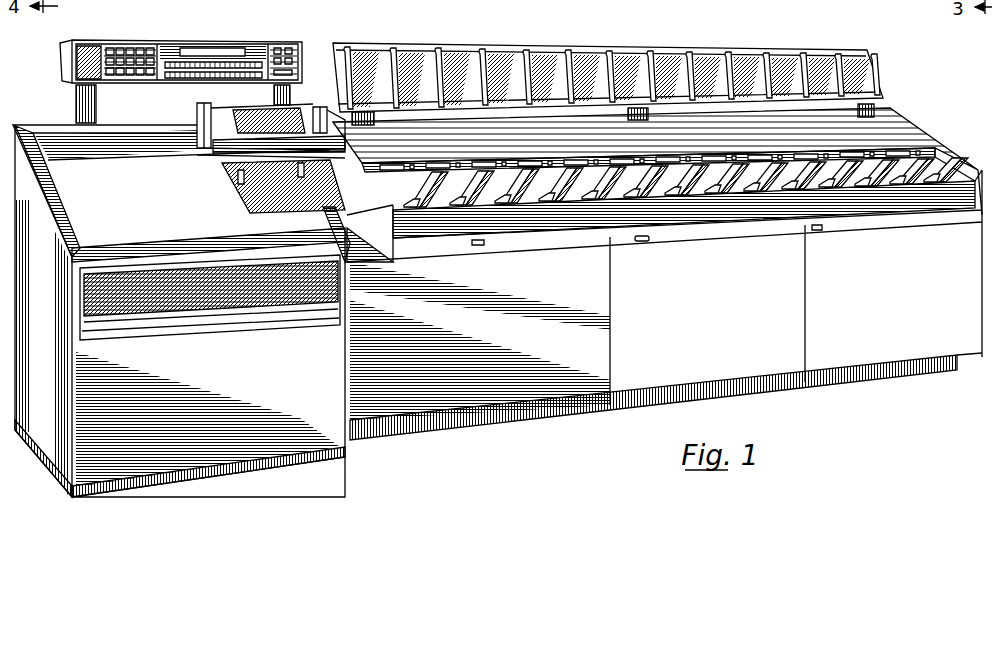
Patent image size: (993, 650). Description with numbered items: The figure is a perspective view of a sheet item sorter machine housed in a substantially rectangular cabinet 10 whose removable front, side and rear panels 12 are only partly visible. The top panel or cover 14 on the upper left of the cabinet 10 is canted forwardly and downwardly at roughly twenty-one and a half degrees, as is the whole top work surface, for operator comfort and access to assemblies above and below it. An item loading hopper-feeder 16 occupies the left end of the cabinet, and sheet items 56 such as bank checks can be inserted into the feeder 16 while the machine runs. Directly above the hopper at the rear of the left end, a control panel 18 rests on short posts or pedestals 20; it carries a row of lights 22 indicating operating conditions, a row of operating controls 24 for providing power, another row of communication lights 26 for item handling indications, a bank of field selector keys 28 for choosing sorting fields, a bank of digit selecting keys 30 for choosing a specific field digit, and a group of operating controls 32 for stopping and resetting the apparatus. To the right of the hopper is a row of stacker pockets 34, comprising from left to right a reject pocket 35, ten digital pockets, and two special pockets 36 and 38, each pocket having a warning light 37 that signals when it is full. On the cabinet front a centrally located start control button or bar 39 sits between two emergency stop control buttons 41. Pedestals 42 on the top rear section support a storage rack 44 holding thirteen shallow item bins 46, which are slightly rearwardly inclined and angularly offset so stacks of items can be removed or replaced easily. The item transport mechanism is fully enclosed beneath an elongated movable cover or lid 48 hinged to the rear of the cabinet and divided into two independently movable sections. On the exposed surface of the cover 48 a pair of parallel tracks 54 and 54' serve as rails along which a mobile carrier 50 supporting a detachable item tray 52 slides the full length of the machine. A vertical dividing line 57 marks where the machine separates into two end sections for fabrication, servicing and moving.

The cabinet 10 is at (905, 358).
The removable panels 12 is at (338, 450).
The top panel or cover 14 is at (213, 226).
The item loading hopper-feeder 16 is at (357, 190).
The control panel 18 is at (172, 42).
The posts or pedestals 20 is at (80, 109).
The row of lights 22 is at (140, 46).
The row of operating controls 24 is at (106, 46).
The row of communication lights 26 is at (108, 80).
The bank of field selector keys 28 is at (229, 62).
The bank of digit selecting keys 30 is at (253, 66).
The group of operating controls 32 is at (290, 46).
The stacker pockets 34 is at (548, 218).
The reject pocket 35 is at (398, 224).
The special pocket 36 is at (908, 208).
The warning light 37 is at (573, 162).
The special pocket 38 is at (936, 166).
The start control button or bar 39 is at (645, 243).
The emergency stop control buttons 41 is at (480, 246).
The pedestals 42 is at (876, 114).
The storage rack 44 is at (592, 50).
The item bins 46 is at (464, 58).
The movable cover or lid 48 is at (905, 136).
The mobile carrier 50 is at (196, 120).
The detachable item tray 52 is at (203, 112).
The track 54 is at (179, 193).
The track 54' is at (44, 179).
The sheet items 56 is at (258, 110).
The dividing line 57 is at (612, 322).